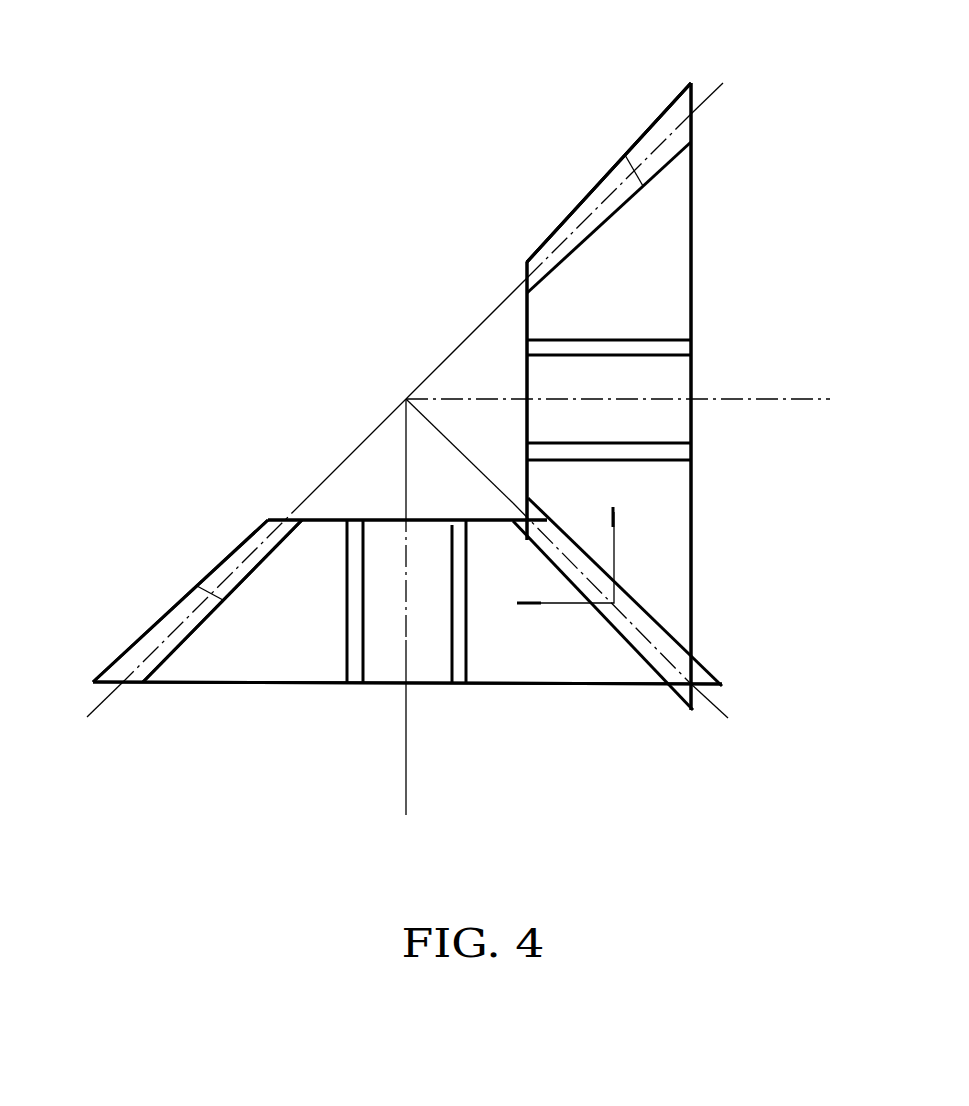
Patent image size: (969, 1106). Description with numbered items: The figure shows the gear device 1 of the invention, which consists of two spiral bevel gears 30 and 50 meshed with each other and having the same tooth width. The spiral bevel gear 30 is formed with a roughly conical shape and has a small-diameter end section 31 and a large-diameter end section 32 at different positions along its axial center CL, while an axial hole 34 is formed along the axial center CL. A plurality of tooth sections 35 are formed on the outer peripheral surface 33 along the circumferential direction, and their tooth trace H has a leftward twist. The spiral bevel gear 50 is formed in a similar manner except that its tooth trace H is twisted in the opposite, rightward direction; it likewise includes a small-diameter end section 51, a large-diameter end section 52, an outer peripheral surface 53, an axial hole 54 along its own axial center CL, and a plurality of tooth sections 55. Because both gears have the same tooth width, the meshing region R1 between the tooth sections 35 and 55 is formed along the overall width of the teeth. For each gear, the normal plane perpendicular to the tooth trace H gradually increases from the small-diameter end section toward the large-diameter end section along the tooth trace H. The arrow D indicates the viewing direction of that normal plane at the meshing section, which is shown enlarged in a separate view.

The gear device 1 is at (265, 385).
The spiral bevel gear 30 is at (693, 305).
The small-diameter end section 31 is at (525, 313).
The large-diameter end section 32 is at (692, 238).
The outer peripheral surface 33 is at (625, 153).
The axial hole 34 is at (693, 370).
The tooth sections 35 is at (558, 224).
The spiral bevel gear 50 is at (215, 687).
The small-diameter end section 51 is at (323, 517).
The large-diameter end section 52 is at (290, 684).
The outer peripheral surface 53 is at (197, 584).
The axial hole 54 is at (435, 672).
The tooth sections 55 is at (158, 617).
The meshing region R1 is at (653, 632).
The tooth trace H is at (713, 700).
The arrow D- D is at (603, 521).
The axial center CL is at (758, 398).